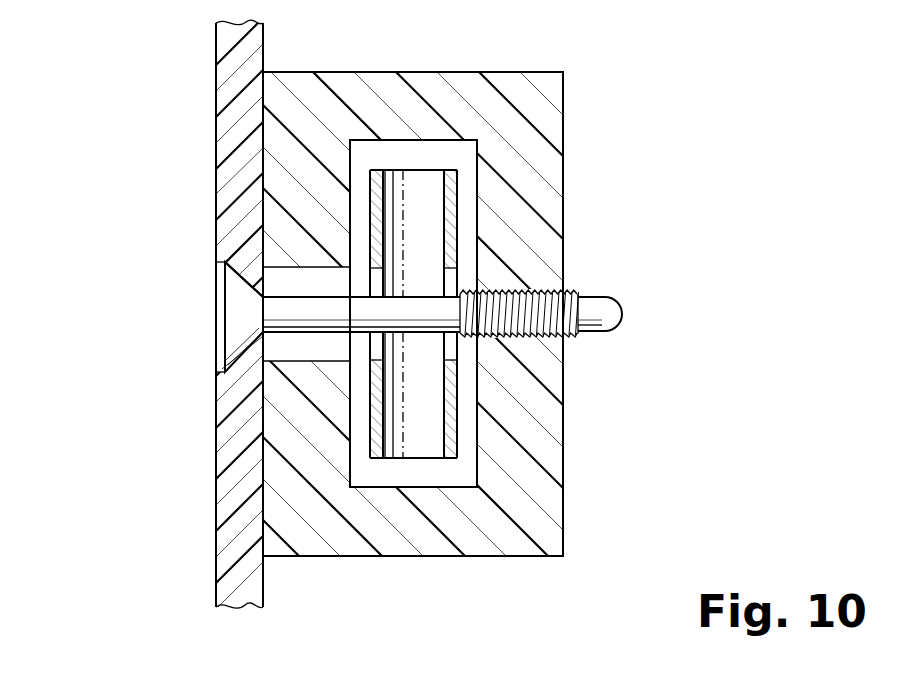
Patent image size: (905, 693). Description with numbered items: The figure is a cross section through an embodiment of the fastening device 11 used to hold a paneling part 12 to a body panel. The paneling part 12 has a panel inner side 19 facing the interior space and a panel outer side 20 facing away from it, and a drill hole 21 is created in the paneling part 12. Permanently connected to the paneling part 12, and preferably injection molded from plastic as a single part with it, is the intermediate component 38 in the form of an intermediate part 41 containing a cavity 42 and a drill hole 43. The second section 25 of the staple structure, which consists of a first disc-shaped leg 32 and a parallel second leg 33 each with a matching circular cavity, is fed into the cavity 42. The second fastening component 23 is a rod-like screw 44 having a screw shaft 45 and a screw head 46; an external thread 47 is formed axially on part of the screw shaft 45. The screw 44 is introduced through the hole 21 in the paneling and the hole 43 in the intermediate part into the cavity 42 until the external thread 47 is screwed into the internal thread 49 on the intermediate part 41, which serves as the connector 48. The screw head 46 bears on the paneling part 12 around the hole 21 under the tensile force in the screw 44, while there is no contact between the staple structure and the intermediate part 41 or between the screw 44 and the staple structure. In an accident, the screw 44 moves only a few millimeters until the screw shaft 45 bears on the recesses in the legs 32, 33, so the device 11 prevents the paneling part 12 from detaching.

The device 11 is at (692, 167).
The paneling part 12 is at (240, 100).
The panel inner side 19 is at (210, 48).
The panel outer side 20 is at (271, 46).
The drill hole 21 is at (232, 283).
The second fastening component 23 is at (420, 319).
The second section 25 is at (390, 314).
The first leg 32 is at (450, 223).
The second leg 33 is at (377, 217).
The intermediate component 38 is at (452, 314).
The intermediate part 41 is at (538, 100).
The cavity 42 is at (467, 175).
The drill hole 43 is at (457, 319).
The screw 44 is at (420, 319).
The screw shaft 45 is at (695, 335).
The screw head 46 is at (235, 311).
The external thread 47 is at (600, 312).
The connector 48 is at (457, 319).
The internal thread 49 is at (583, 295).